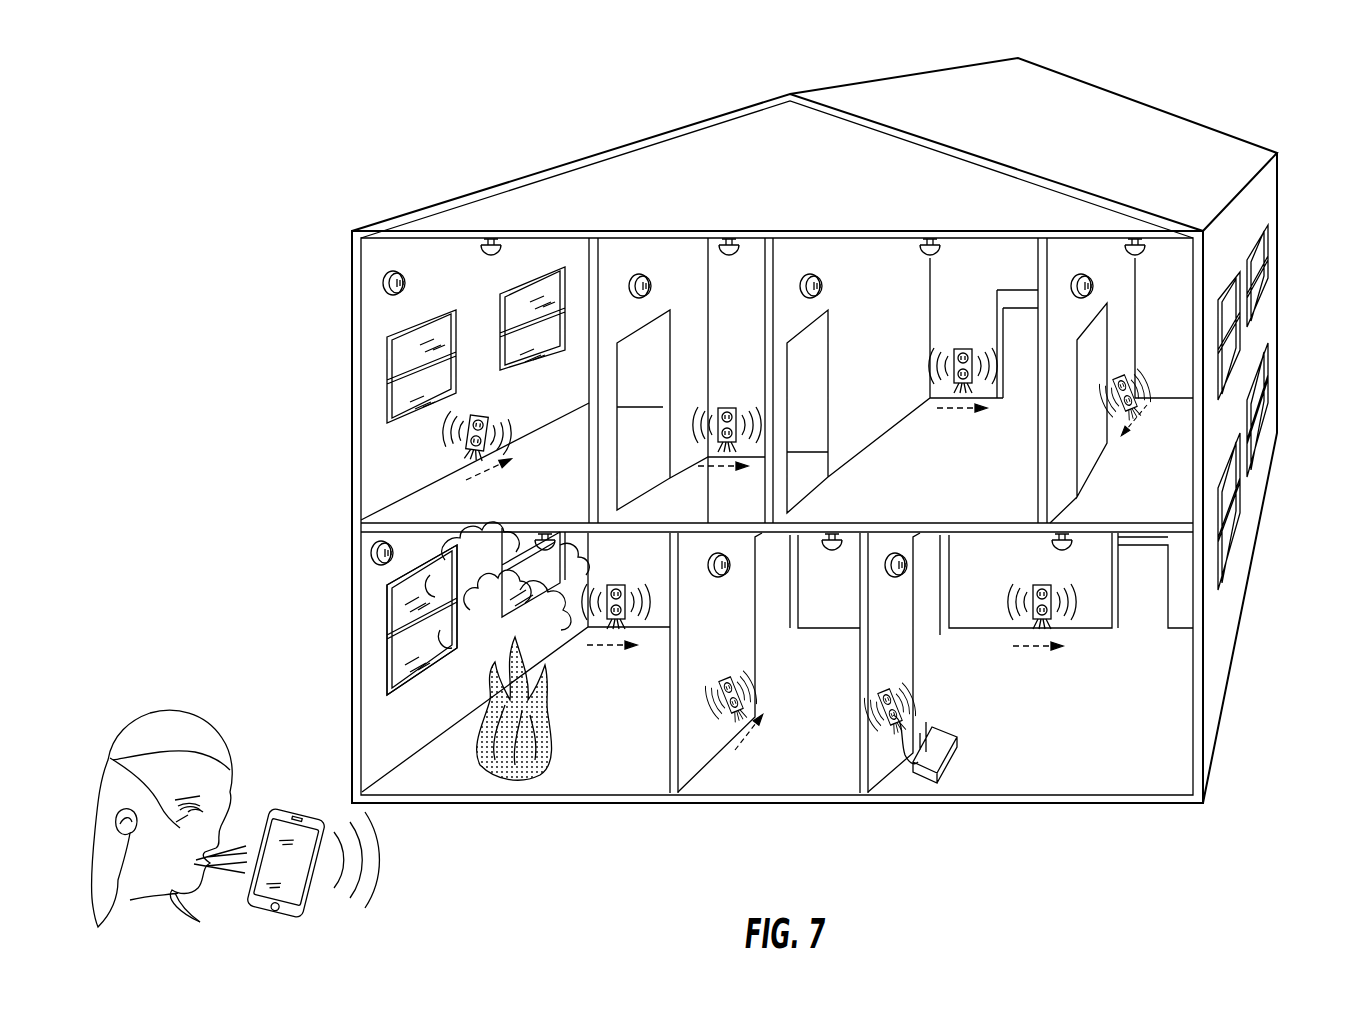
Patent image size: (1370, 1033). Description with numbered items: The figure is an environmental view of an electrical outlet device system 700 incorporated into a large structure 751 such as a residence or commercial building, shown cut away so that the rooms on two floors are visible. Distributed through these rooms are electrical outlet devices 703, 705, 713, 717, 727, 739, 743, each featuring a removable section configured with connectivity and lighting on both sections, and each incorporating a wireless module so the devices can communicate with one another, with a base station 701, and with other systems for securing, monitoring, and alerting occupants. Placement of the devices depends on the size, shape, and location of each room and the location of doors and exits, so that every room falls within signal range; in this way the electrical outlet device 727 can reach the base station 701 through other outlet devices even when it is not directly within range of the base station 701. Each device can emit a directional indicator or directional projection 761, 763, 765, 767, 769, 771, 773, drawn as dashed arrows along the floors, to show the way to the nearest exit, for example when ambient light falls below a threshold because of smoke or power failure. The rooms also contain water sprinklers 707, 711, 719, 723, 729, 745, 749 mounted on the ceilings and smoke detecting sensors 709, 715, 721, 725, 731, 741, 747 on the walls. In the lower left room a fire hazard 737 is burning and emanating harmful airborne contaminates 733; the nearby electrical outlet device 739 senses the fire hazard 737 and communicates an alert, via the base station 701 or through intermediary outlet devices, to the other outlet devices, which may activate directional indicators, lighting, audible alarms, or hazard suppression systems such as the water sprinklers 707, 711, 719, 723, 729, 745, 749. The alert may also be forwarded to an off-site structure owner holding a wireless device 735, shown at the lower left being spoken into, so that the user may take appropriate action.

The electrical outlet device system 700 is at (231, 66).
The base station 701 is at (957, 750).
The electrical outlet device 703 is at (1042, 585).
The electrical outlet device 705 is at (1134, 388).
The water sprinkler 707 is at (1136, 237).
The smoke detecting sensor 709 is at (1083, 274).
The water sprinkler 711 is at (930, 237).
The electrical outlet device 713 is at (963, 349).
The smoke detecting sensor 715 is at (812, 274).
The electrical outlet device 717 is at (728, 408).
The water sprinkler 719 is at (729, 237).
The smoke detecting sensor 721 is at (641, 274).
The water sprinkler 723 is at (490, 237).
The smoke detecting sensor 725 is at (384, 283).
The electrical outlet device 727 is at (488, 432).
The water sprinkler 729 is at (546, 533).
The smoke detecting sensor 731 is at (372, 553).
The harmful airborne contaminates 733 is at (460, 662).
The wireless device 735 is at (307, 903).
The fire hazard 737 is at (546, 748).
The electrical outlet device 739 is at (616, 585).
The smoke detecting sensor 741 is at (714, 578).
The electrical outlet device 743 is at (740, 692).
The water sprinkler 745 is at (833, 532).
The smoke detecting sensor 747 is at (898, 553).
The water sprinkler 749 is at (1063, 531).
The large structure 751 is at (1268, 206).
The directional indicator 761 is at (1037, 648).
The directional indicator 763 is at (1140, 408).
The directional indicator 765 is at (957, 409).
The directional indicator 767 is at (712, 468).
The directional indicator 769 is at (468, 482).
The directional indicator 771 is at (611, 648).
The directional indicator 773 is at (748, 733).